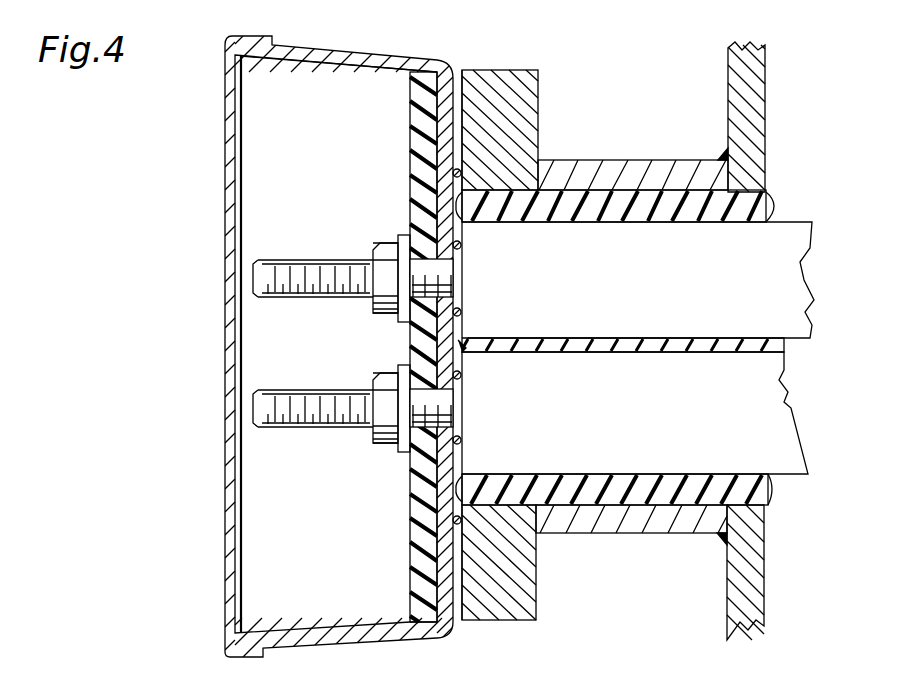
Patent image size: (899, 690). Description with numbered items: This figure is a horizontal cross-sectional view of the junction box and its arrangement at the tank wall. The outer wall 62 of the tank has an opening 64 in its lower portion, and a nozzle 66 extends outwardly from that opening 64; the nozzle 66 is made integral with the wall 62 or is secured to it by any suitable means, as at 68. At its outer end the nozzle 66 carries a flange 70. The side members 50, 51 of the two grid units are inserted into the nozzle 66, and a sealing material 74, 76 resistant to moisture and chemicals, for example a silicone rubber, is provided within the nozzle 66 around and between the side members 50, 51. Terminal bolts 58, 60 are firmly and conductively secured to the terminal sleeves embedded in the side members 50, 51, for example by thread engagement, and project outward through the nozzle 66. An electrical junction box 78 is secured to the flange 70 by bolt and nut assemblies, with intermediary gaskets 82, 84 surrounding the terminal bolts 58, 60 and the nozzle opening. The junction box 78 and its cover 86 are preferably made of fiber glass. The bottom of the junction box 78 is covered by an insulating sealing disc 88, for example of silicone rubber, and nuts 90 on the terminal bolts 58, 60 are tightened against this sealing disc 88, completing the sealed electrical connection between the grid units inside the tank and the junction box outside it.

The side member 50 is at (767, 417).
The side member 51 is at (782, 252).
The terminal bolt 58 is at (312, 350).
The terminal bolt 60 is at (322, 230).
The outer wall 62 is at (753, 70).
The opening 64 is at (756, 207).
The nozzle 66 is at (580, 172).
The securing means 68 is at (725, 541).
The flange 70 is at (528, 32).
The sealing material 74 is at (568, 207).
The sealing material 76 is at (640, 303).
The junction box 78 is at (362, 22).
The gasket 82 is at (457, 312).
The gasket 84 is at (453, 173).
The cover 86 is at (225, 160).
The insulating sealing disc 88 is at (413, 190).
The nuts 90 is at (380, 350).